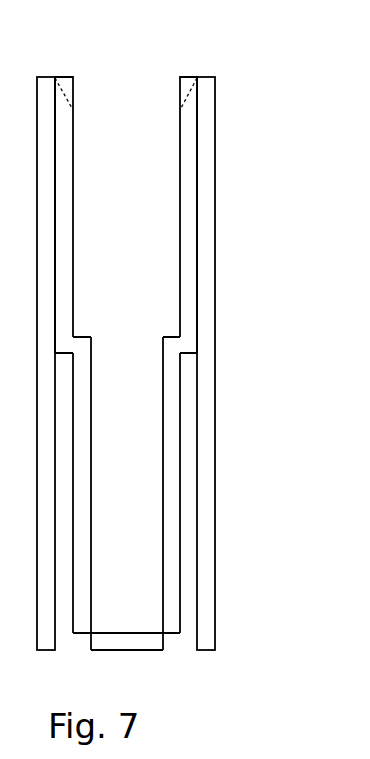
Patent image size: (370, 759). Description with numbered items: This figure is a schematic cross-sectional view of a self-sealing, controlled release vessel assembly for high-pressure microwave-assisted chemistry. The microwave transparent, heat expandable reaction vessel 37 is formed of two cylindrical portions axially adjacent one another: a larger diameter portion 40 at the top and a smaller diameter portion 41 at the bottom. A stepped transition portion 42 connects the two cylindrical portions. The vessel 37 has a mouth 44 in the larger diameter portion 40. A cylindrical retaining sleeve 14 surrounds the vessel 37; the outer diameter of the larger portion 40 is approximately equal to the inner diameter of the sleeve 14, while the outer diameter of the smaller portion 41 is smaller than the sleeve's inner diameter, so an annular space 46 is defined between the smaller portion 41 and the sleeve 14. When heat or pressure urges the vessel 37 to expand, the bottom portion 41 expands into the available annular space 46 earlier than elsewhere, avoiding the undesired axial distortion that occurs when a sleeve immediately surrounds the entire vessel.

The cylindrical retaining sleeve 14 is at (208, 577).
The reaction vessel 37 is at (252, 440).
The larger diameter cylindrical portion 40 is at (189, 247).
The smaller diameter cylindrical portion 41 is at (173, 524).
The transition portion 42 is at (189, 349).
The mouth 44 is at (103, 96).
The annular space 46 is at (187, 641).